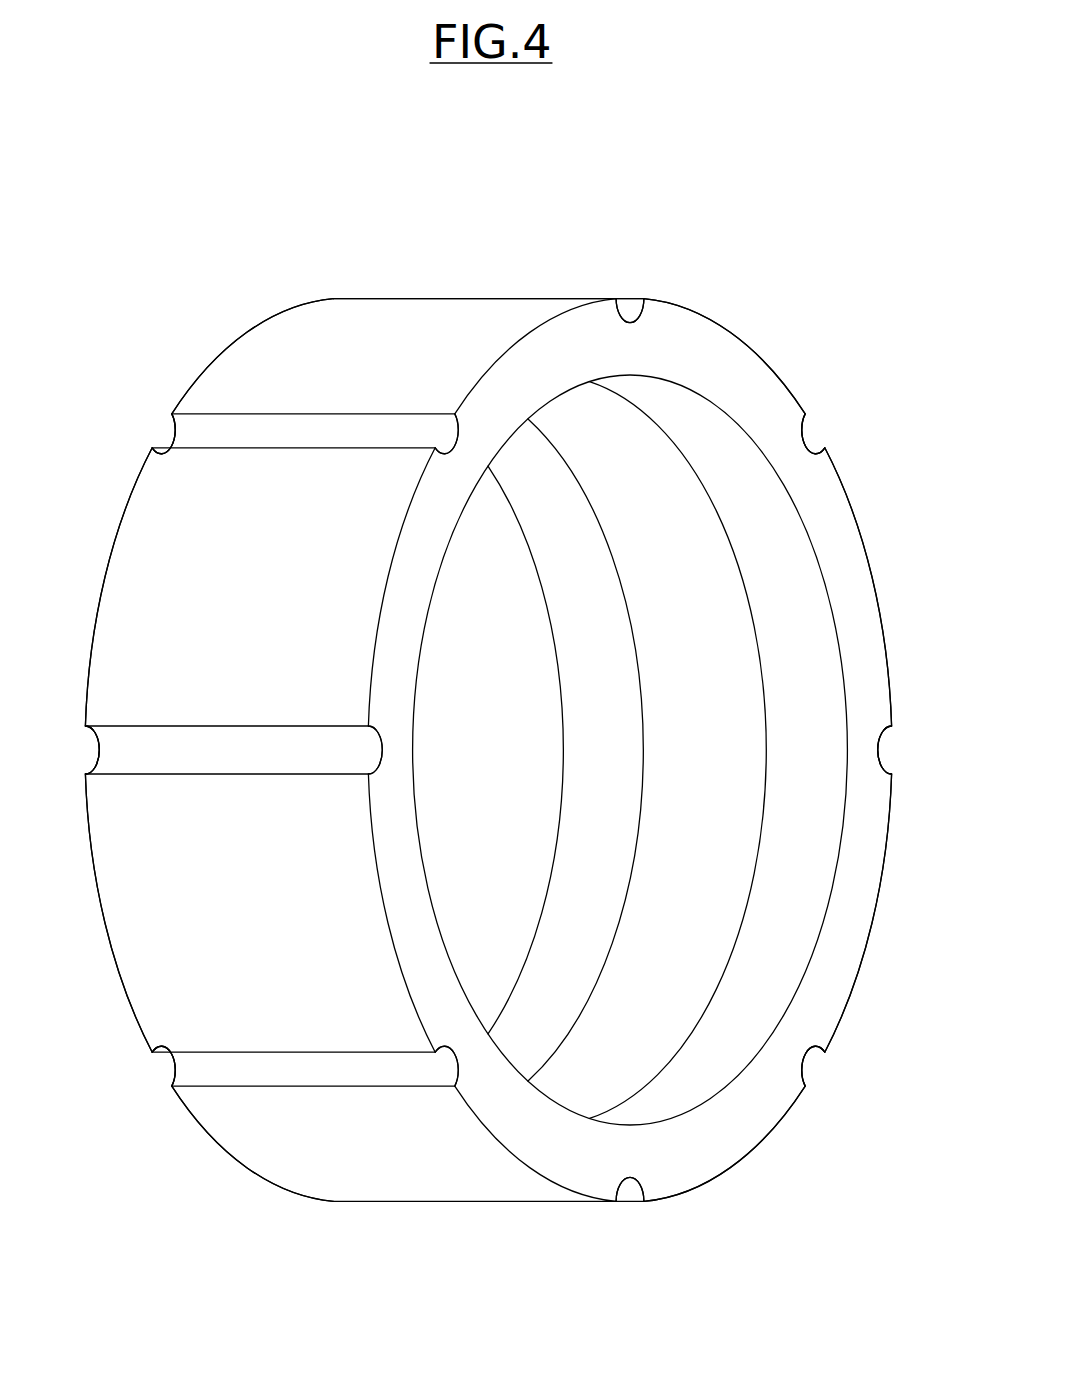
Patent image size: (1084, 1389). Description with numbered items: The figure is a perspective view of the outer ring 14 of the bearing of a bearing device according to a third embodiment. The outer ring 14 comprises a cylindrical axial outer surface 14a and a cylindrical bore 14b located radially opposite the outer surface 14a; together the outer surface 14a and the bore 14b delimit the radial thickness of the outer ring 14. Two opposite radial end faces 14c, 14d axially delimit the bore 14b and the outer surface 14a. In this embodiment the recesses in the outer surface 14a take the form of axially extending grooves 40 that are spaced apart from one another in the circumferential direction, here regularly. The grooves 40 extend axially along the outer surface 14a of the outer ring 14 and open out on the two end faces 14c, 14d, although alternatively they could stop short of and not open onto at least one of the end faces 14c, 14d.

The outer ring 14 is at (571, 226).
The cylindrical axial outer surface 14a is at (412, 328).
The cylindrical bore 14b is at (770, 550).
The radial end face 14c is at (103, 580).
The radial end face 14d is at (850, 893).
The axially extending grooves 40 is at (272, 435).